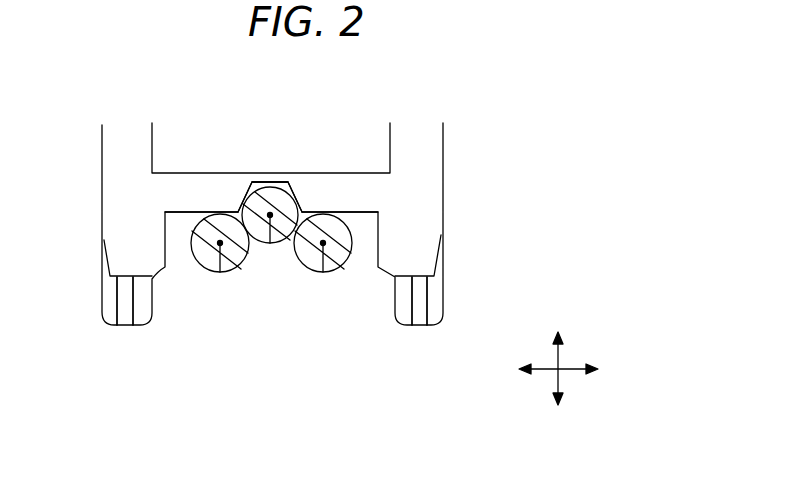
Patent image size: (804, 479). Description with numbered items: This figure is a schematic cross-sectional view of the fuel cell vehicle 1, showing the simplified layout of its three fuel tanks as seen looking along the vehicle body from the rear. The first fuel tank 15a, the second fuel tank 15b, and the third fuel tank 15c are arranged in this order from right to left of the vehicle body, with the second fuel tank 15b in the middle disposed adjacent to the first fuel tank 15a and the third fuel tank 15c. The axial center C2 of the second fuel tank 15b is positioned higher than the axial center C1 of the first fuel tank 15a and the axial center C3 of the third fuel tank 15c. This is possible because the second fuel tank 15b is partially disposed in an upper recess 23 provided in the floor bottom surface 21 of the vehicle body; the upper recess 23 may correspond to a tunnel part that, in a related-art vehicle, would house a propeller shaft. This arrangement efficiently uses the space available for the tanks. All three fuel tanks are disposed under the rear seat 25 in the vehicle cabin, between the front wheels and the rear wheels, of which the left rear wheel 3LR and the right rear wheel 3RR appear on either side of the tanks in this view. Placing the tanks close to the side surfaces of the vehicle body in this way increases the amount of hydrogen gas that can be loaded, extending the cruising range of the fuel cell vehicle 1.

The fuel cell vehicle 1 is at (576, 279).
The floor bottom surface 21 is at (200, 206).
The upper recess 23 is at (248, 195).
The rear seat 25 is at (375, 143).
The first fuel tank 15a is at (350, 238).
The second fuel tank 15b is at (305, 202).
The third fuel tank 15c is at (190, 236).
The right rear wheel 3RR is at (106, 298).
The left rear wheel 3LR is at (437, 297).
The axial center of the first fuel tank C1 is at (319, 272).
The axial center of the second fuel tank C2 is at (270, 243).
The axial center of the third fuel tank C3 is at (222, 272).